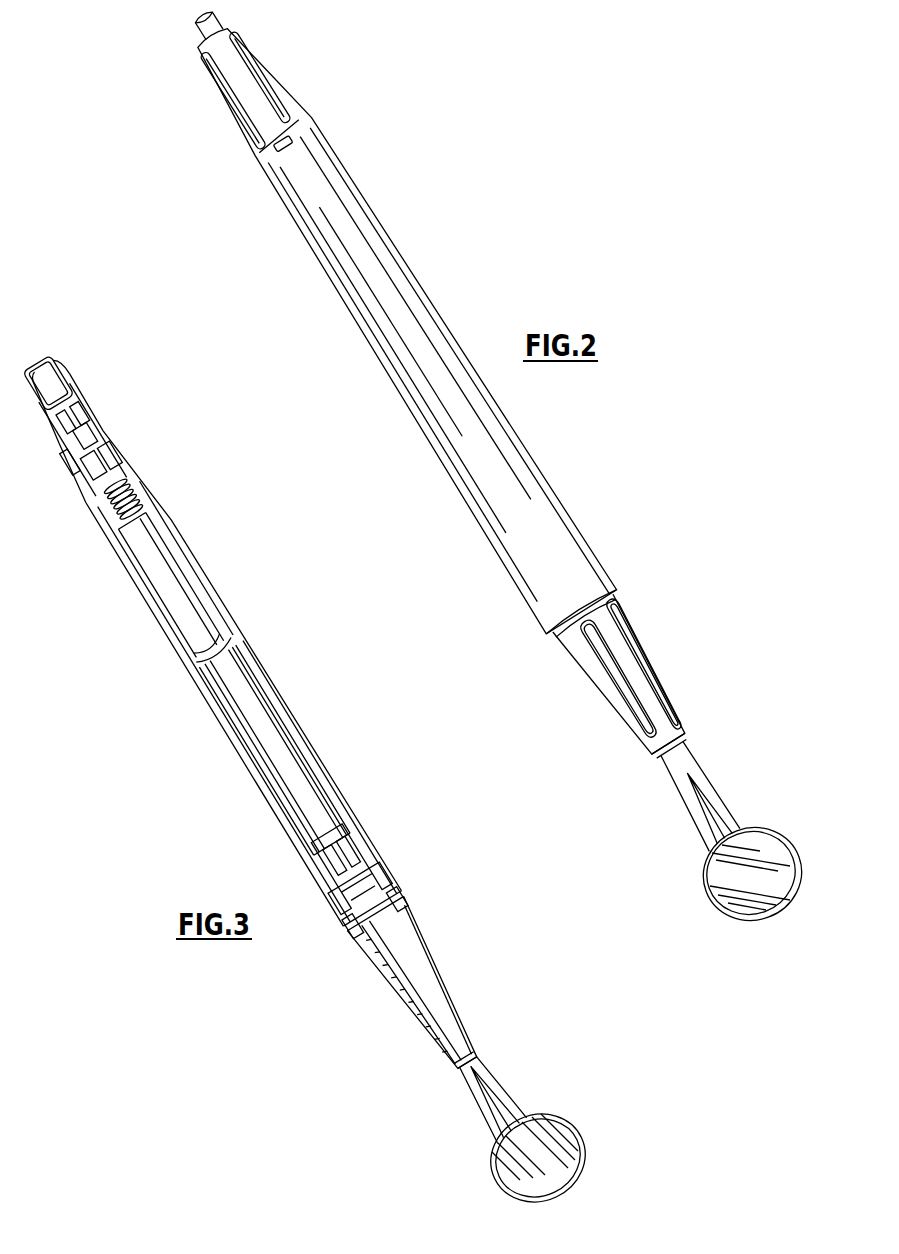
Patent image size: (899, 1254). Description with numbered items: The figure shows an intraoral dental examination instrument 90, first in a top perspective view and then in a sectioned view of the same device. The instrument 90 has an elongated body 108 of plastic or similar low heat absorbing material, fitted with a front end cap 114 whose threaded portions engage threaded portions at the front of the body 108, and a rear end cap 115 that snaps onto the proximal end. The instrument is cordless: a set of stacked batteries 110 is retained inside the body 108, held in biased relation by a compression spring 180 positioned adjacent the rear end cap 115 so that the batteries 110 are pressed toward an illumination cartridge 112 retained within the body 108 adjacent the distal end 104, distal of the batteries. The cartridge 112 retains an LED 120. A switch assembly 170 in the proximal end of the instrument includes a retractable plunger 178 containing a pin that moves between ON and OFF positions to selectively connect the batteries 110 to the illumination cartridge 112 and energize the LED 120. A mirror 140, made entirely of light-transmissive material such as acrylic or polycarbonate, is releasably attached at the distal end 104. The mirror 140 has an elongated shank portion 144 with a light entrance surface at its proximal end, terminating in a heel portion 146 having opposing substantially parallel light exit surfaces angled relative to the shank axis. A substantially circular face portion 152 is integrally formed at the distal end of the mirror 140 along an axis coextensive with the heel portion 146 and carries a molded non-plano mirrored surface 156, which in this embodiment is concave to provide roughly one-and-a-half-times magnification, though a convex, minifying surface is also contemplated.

In FIG. 2, the intraoral dental examination instrument 90 is at (476, 487).
In FIG. 3, the intraoral dental examination instrument 90 is at (313, 755).
In FIG. 2, the distal end 104 is at (682, 737).
In FIG. 2, the elongated body 108 is at (543, 480).
In FIG. 3, the elongated body 108 is at (293, 710).
In FIG. 3, the stacked batteries 110 is at (227, 690).
In FIG. 3, the illumination cartridge 112 is at (342, 857).
In FIG. 2, the front end cap 114 is at (580, 673).
In FIG. 3, the front end cap 114 is at (440, 973).
In FIG. 3, the rear end cap 115 is at (95, 400).
In FIG. 3, the LED 120 is at (398, 898).
In FIG. 2, the mirror 140 is at (720, 871).
In FIG. 3, the mirror 140 is at (551, 1141).
In FIG. 2, the shank portion 144 is at (693, 758).
In FIG. 3, the shank portion 144 is at (430, 1010).
In FIG. 2, the heel portion 146 is at (715, 822).
In FIG. 3, the heel portion 146 is at (495, 1107).
In FIG. 2, the face portion 152 is at (708, 903).
In FIG. 2, the non-plano mirrored surface 156 is at (770, 900).
In FIG. 3, the non-plano mirrored surface 156 is at (555, 1173).
In FIG. 3, the switch assembly 170 is at (68, 463).
In FIG. 3, the retractable plunger 178 is at (78, 430).
In FIG. 3, the compression spring 180 is at (137, 493).